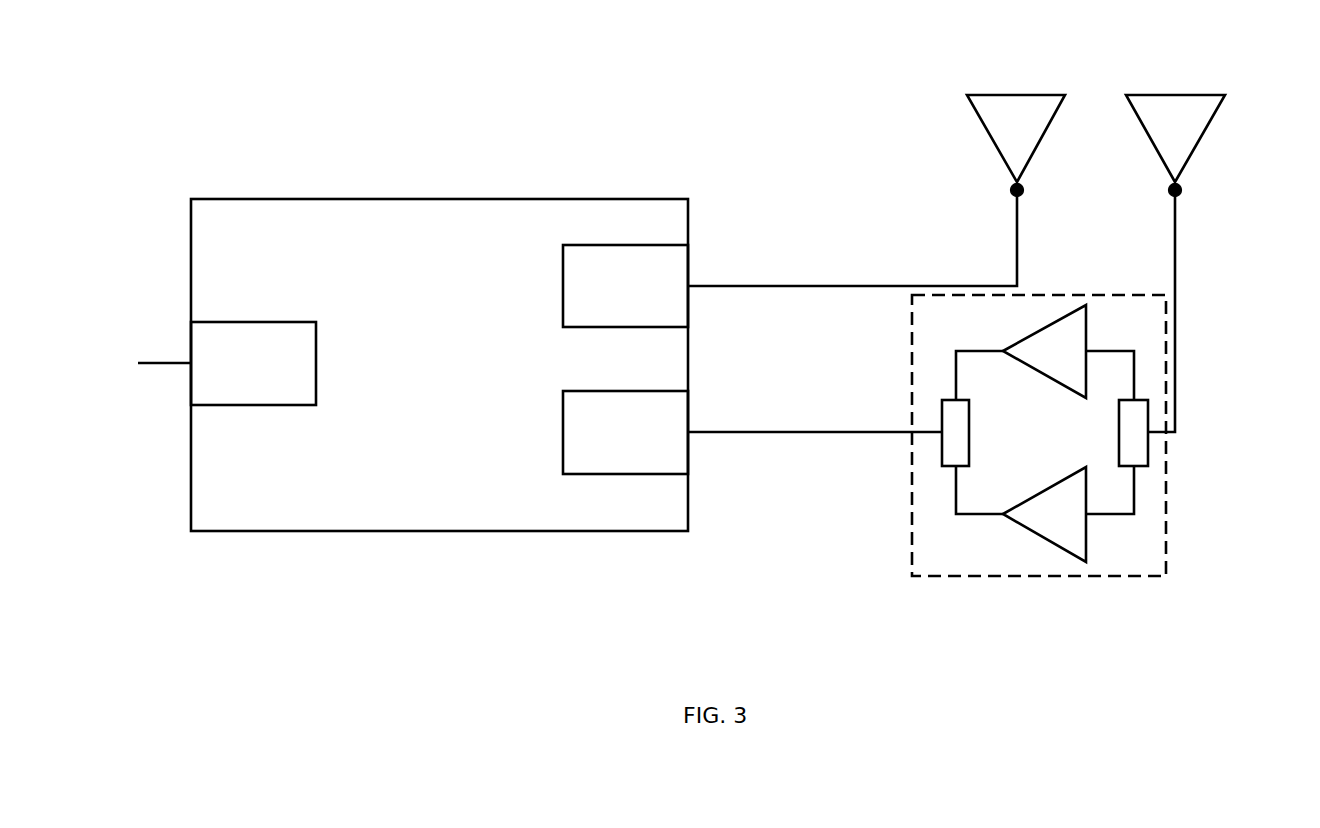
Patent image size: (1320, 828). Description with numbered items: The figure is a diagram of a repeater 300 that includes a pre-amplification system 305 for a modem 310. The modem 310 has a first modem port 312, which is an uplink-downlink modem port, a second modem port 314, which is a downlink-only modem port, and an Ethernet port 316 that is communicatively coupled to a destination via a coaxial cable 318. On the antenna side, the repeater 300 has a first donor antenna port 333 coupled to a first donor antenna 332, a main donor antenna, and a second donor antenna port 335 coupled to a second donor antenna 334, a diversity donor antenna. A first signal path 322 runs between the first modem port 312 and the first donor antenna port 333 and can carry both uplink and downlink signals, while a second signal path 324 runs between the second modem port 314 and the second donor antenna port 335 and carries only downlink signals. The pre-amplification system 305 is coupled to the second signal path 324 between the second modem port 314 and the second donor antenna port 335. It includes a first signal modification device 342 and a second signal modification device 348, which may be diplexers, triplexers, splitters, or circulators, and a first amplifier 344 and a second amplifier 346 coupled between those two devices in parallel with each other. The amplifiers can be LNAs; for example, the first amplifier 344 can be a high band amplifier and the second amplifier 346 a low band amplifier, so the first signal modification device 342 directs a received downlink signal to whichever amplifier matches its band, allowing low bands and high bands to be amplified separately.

The repeater 300 is at (265, 135).
The pre-amplification system 305 is at (964, 571).
The modem 310 is at (247, 239).
The first modem port 312 is at (646, 297).
The second modem port 314 is at (646, 443).
The Ethernet port 316 is at (276, 374).
The coaxial cable 318 is at (155, 363).
The first signal path 322 is at (768, 286).
The second signal path 324 is at (768, 432).
The first donor antenna 332 is at (1011, 95).
The first donor antenna port 333 is at (1010, 190).
The second donor antenna 334 is at (1176, 95).
The second donor antenna port 335 is at (1183, 190).
The first signal modification device 342 is at (1148, 462).
The first amplifier 344 is at (1078, 302).
The second amplifier 346 is at (1072, 560).
The second signal modification device 348 is at (942, 462).